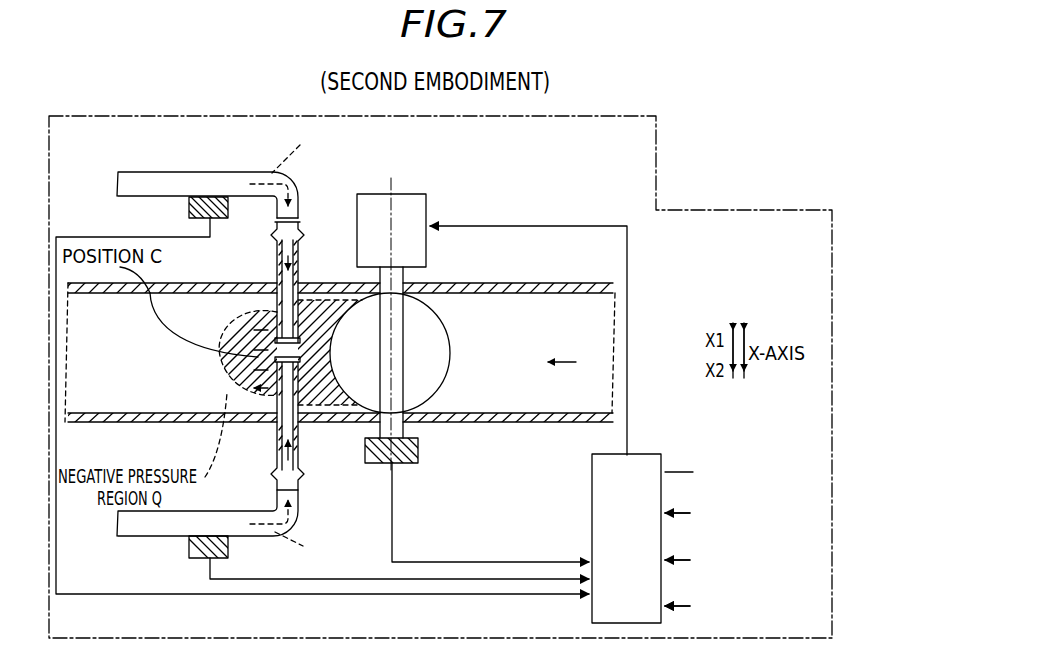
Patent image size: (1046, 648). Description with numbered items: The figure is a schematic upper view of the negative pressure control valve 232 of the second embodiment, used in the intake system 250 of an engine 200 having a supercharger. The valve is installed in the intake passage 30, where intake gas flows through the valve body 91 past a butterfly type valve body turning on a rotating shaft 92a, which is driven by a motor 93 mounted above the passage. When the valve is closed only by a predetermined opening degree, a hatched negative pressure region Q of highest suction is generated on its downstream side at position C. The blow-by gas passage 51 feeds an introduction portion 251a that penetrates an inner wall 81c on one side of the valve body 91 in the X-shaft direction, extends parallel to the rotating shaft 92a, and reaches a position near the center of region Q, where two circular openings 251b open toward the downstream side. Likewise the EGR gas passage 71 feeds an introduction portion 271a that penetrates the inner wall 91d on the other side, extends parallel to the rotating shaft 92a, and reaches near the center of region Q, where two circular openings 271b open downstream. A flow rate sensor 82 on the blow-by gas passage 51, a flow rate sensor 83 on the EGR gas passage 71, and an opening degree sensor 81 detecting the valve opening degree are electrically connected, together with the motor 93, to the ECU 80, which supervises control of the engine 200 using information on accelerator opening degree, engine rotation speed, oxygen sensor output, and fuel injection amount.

The intake system 250 is at (398, 160).
The engine 200 is at (678, 201).
The intake passage 30 is at (536, 271).
The blow-by gas passage 51 is at (196, 172).
The flow rate sensor 82 is at (189, 207).
The circular openings 251b is at (260, 292).
The introduction portion 251a is at (317, 292).
The motor 93 is at (413, 194).
The negative pressure control valve 232 is at (454, 208).
The rotating shaft 92a is at (404, 277).
The valve body 91 is at (510, 286).
The inner wall 91d is at (193, 413).
The intake pipe wall portion 81c is at (198, 298).
The opening degree sensor 81 is at (447, 338).
The circular openings 271b is at (270, 402).
The introduction portion 271a is at (311, 405).
The EGR gas passage 71 is at (298, 515).
The flow rate sensor 83 is at (189, 547).
The ECU 80 is at (648, 454).